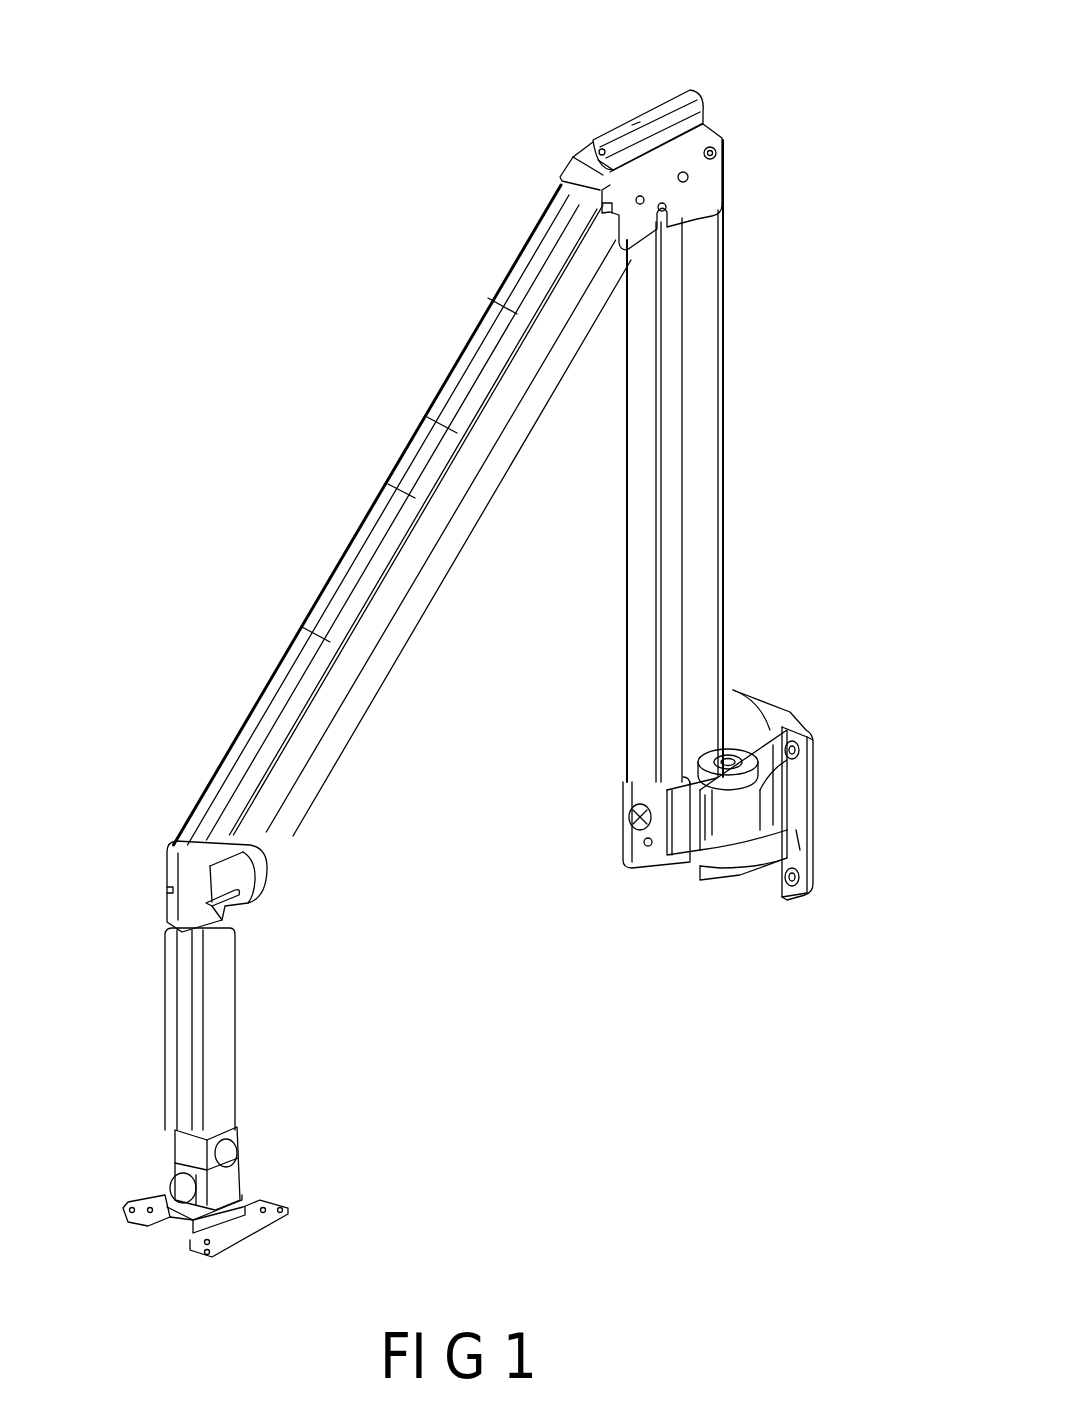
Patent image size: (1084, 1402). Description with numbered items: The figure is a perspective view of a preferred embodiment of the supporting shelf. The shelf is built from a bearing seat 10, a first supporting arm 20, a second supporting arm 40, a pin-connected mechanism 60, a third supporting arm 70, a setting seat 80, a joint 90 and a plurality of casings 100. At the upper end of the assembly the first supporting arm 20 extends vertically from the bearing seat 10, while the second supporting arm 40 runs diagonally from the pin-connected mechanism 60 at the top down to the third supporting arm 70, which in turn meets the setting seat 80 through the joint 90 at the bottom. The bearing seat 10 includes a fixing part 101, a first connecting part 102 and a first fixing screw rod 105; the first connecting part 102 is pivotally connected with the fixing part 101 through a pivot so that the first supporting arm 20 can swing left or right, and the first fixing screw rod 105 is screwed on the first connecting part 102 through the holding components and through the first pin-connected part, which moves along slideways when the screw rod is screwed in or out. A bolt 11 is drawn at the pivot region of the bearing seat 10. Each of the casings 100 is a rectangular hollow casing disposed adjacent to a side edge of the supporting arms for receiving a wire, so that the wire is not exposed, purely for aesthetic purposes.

The bearing seat 10 is at (830, 690).
The pivot bolt 11 is at (732, 752).
The first supporting arm 20 is at (805, 405).
The second supporting arm 40 is at (358, 418).
The pin-connected mechanism 60 is at (716, 148).
The third supporting arm 70 is at (225, 1047).
The setting seat 80 is at (270, 1218).
The joint 90 is at (238, 1172).
The casings 100 is at (633, 125).
The fixing part 101 is at (800, 843).
The first connecting part 102 is at (746, 832).
The first fixing screw rod 105 is at (638, 835).